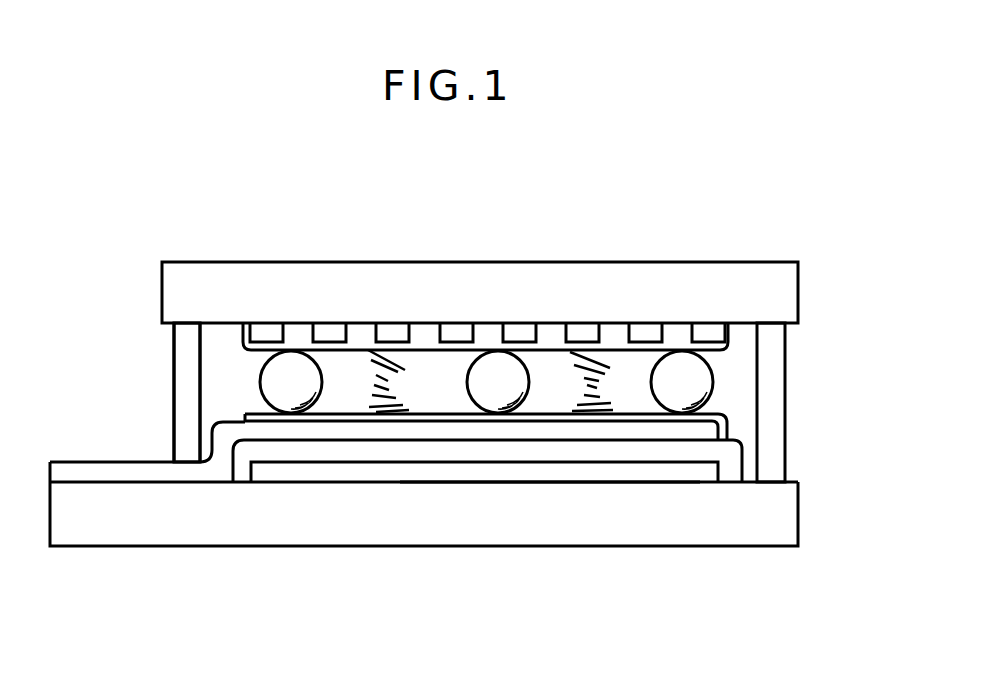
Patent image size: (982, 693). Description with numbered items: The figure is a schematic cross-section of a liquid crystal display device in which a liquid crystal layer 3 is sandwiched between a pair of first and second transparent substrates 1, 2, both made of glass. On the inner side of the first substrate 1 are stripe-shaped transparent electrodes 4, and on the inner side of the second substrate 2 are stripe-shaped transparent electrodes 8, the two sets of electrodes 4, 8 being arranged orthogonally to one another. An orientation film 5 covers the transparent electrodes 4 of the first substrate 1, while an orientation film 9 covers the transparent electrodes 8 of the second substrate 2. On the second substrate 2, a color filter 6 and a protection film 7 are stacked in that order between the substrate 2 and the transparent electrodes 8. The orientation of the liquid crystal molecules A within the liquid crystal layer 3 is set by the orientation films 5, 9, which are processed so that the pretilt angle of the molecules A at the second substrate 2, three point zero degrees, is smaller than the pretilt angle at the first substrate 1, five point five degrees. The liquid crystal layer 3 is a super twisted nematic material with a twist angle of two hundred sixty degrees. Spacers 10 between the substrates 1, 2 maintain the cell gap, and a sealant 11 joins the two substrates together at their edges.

The first transparent substrate 1 is at (230, 277).
The second transparent substrate 2 is at (268, 527).
The liquid crystal layer 3 is at (207, 402).
The transparent electrodes 4 is at (385, 330).
The orientation film 5 is at (615, 332).
The color filter 6 is at (635, 472).
The protection film 7 is at (692, 457).
The transparent electrodes 8 is at (713, 434).
The orientation film 9 is at (727, 416).
The spacers 10 is at (270, 383).
The sealant 11 is at (187, 345).
The liquid crystal molecules A is at (368, 388).